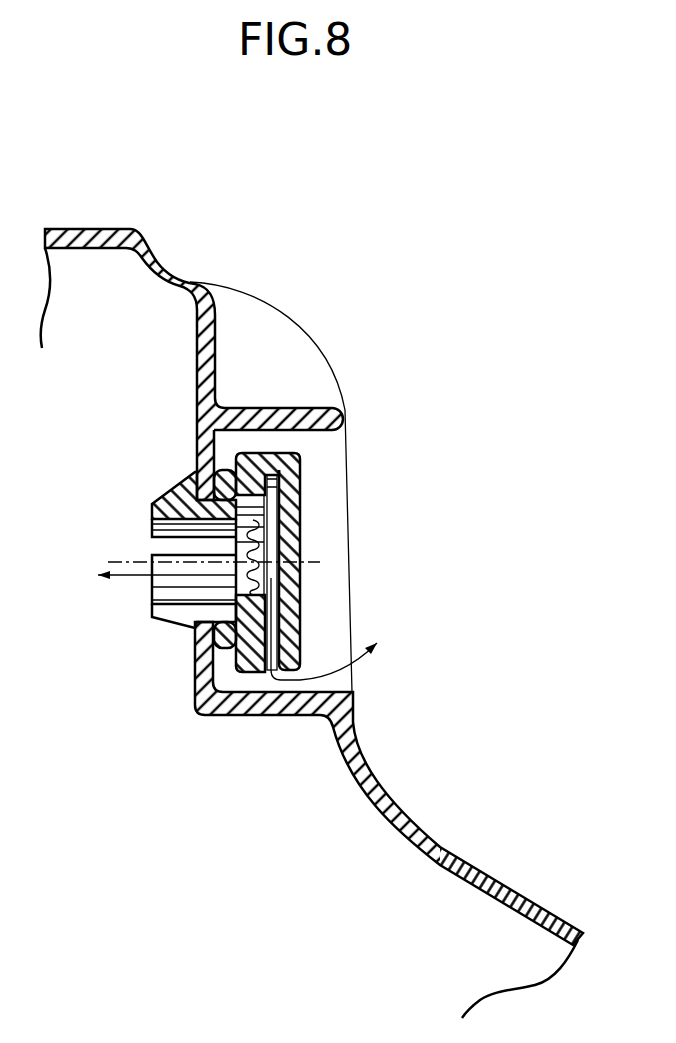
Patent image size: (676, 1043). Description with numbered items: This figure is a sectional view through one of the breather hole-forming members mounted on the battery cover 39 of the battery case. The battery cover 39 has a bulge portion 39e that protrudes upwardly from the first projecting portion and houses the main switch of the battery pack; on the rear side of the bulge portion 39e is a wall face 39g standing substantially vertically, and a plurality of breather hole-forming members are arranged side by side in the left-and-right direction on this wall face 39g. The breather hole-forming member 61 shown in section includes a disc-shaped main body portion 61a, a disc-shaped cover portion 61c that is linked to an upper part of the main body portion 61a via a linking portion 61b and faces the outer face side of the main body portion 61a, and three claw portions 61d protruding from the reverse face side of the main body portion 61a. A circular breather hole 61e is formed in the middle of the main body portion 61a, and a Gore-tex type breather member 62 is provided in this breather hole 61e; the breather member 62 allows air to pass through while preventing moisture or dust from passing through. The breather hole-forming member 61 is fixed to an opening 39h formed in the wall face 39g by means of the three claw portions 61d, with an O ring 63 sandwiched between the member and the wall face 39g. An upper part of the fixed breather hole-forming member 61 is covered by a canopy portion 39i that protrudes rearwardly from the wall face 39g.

The battery cover 39 is at (493, 872).
The bulge portion 39e is at (82, 229).
The wall face 39g is at (211, 357).
The opening 39h is at (205, 622).
The canopy portion 39i is at (305, 408).
The breather hole-forming member 61 is at (305, 570).
The main body portion 61a is at (252, 670).
The linking portion 61b is at (273, 453).
The cover portion 61c is at (300, 510).
The claw portions 61d is at (160, 497).
The breather hole 61e is at (270, 545).
The breather member 62 is at (272, 580).
The O ring 63 is at (227, 473).